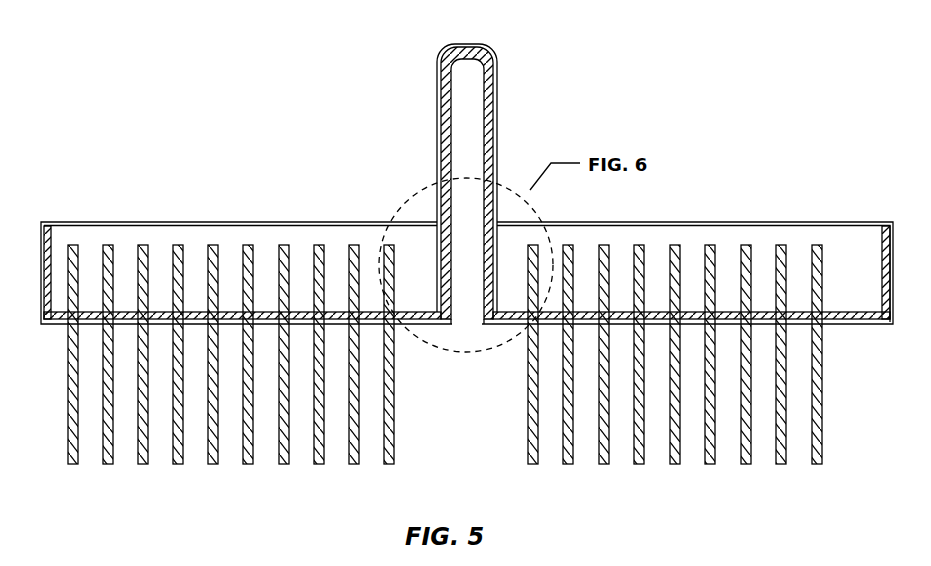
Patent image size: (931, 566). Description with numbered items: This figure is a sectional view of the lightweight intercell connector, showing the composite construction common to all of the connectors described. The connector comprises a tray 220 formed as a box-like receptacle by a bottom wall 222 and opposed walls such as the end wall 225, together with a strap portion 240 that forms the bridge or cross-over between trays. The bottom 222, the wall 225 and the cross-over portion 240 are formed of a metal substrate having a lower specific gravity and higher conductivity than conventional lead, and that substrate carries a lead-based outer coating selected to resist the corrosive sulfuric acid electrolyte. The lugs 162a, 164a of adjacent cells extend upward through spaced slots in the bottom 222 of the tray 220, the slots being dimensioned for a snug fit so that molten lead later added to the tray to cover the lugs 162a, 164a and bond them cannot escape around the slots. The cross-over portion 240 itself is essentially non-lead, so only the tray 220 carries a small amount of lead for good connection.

The tray 220 is at (740, 195).
The end wall 225 is at (42, 276).
The bottom wall 222 is at (53, 327).
The strap portion 240 is at (488, 50).
The lug 162a is at (253, 463).
The lug 164a is at (650, 437).